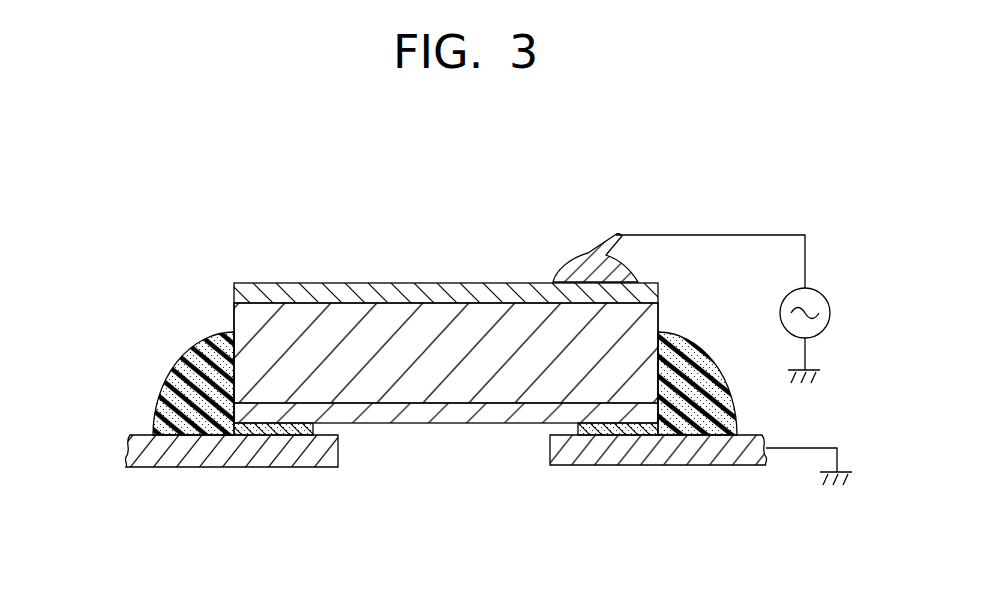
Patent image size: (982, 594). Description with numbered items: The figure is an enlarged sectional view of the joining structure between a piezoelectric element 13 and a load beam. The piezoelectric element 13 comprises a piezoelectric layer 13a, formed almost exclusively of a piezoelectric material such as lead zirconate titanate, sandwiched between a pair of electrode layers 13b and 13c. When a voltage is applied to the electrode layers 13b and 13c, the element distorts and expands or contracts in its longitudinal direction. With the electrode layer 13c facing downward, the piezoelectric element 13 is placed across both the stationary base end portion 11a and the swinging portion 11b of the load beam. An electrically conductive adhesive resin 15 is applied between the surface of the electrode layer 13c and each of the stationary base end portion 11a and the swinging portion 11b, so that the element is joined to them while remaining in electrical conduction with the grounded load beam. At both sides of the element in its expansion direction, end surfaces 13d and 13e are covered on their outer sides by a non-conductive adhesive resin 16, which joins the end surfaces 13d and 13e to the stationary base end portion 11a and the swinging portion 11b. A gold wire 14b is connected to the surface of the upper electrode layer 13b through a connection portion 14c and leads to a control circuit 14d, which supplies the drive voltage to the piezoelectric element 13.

The stationary base end portion 11a is at (645, 453).
The swinging portion 11b is at (210, 453).
The piezoelectric element 13 is at (418, 338).
The piezoelectric layer 13a is at (478, 320).
The electrode layer 13b is at (398, 290).
The electrode layer 13c is at (433, 410).
The end surface 13d is at (660, 320).
The end surface 13e is at (235, 325).
The gold wire 14b is at (670, 235).
The connection portion 14c is at (568, 270).
The control circuit 14d is at (830, 303).
The electrically conductive adhesive resin 15 is at (313, 430).
The non-conductive adhesive resin 16 is at (177, 387).